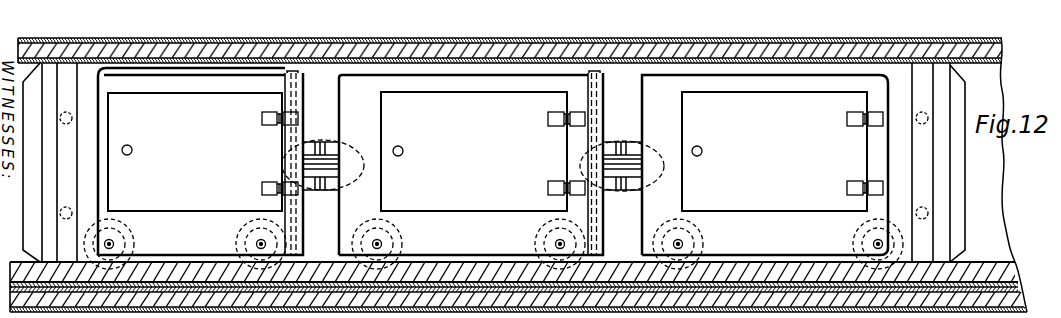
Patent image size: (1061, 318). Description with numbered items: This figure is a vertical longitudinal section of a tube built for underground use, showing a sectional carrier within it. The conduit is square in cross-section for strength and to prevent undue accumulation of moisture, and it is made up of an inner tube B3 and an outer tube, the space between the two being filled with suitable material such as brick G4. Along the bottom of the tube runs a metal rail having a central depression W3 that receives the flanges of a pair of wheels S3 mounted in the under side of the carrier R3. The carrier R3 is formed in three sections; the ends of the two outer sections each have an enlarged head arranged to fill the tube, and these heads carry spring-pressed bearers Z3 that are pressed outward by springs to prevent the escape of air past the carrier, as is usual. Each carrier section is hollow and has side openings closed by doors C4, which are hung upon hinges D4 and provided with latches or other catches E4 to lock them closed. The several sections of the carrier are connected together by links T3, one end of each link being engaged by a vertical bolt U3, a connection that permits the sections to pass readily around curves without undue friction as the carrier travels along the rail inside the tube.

The brick G4 is at (1003, 51).
The inner tube B3 is at (518, 275).
The central depression W3 is at (514, 272).
The spring-pressed bearers Z3 is at (494, 162).
The carrier R3 is at (493, 161).
The doors C4 is at (487, 151).
The vertical bolt U3 is at (293, 102).
The links T3 is at (624, 142).
The latches E4 is at (709, 151).
The hinges D4 is at (257, 150).
The wheels S3 is at (866, 242).